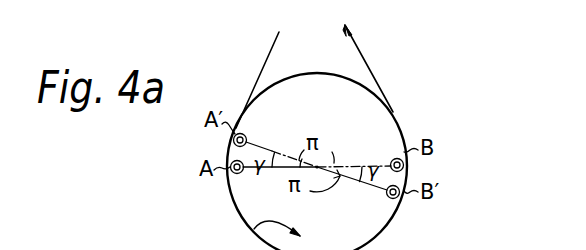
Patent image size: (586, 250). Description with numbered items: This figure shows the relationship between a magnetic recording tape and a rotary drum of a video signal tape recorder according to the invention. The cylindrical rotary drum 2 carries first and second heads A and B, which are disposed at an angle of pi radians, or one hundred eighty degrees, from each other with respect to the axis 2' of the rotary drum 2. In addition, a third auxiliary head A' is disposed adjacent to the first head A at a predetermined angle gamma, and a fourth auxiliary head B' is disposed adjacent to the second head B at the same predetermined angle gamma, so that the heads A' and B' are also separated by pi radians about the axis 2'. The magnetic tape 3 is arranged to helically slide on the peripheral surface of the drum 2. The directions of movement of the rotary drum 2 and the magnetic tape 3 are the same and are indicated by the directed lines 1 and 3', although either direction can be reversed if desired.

The directed line 1 is at (254, 230).
The rotary drum 2 is at (317, 161).
The axis of the rotary drum 2' is at (317, 161).
The magnetic tape 3 is at (315, 76).
The directed line 3' is at (362, 34).